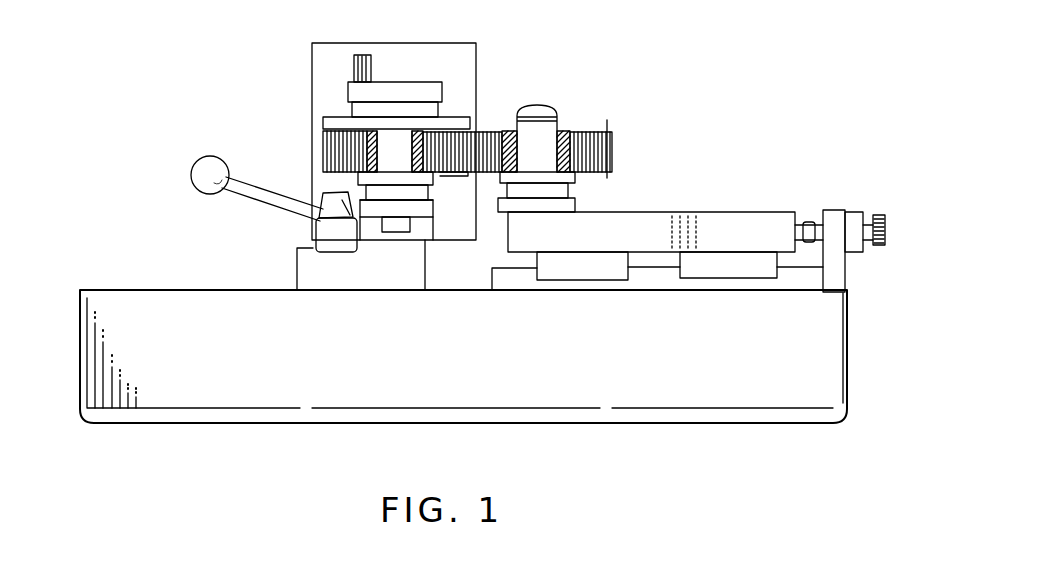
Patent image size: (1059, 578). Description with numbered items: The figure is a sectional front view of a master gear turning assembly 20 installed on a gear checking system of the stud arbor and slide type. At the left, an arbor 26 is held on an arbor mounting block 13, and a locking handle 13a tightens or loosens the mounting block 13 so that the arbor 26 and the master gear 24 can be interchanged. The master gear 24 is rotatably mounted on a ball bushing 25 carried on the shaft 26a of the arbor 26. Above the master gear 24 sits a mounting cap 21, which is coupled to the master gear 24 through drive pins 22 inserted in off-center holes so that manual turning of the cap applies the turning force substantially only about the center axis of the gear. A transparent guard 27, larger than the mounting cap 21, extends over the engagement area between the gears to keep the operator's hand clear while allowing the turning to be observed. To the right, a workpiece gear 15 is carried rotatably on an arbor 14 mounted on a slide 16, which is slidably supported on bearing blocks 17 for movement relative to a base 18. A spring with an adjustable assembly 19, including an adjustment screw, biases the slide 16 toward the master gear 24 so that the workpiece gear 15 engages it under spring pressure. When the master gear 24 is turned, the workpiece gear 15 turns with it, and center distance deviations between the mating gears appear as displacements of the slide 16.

The arbor mounting block 13 is at (297, 265).
The locking handle 13a is at (211, 168).
The arbor 14 is at (554, 114).
The workpiece gear 15 is at (593, 133).
The slide 16 is at (661, 212).
The bearing blocks 17 is at (733, 233).
The base 18 is at (783, 423).
The adjustable assembly 19 is at (881, 206).
The master gear turning assembly 20 is at (386, 240).
The mounting cap 21 is at (348, 86).
The drive pins 22 is at (456, 172).
The master gear 24 is at (340, 147).
The ball bushing 25 is at (365, 164).
The arbor 26 is at (427, 207).
The shaft 26a is at (394, 140).
The transparent guard 27 is at (323, 120).